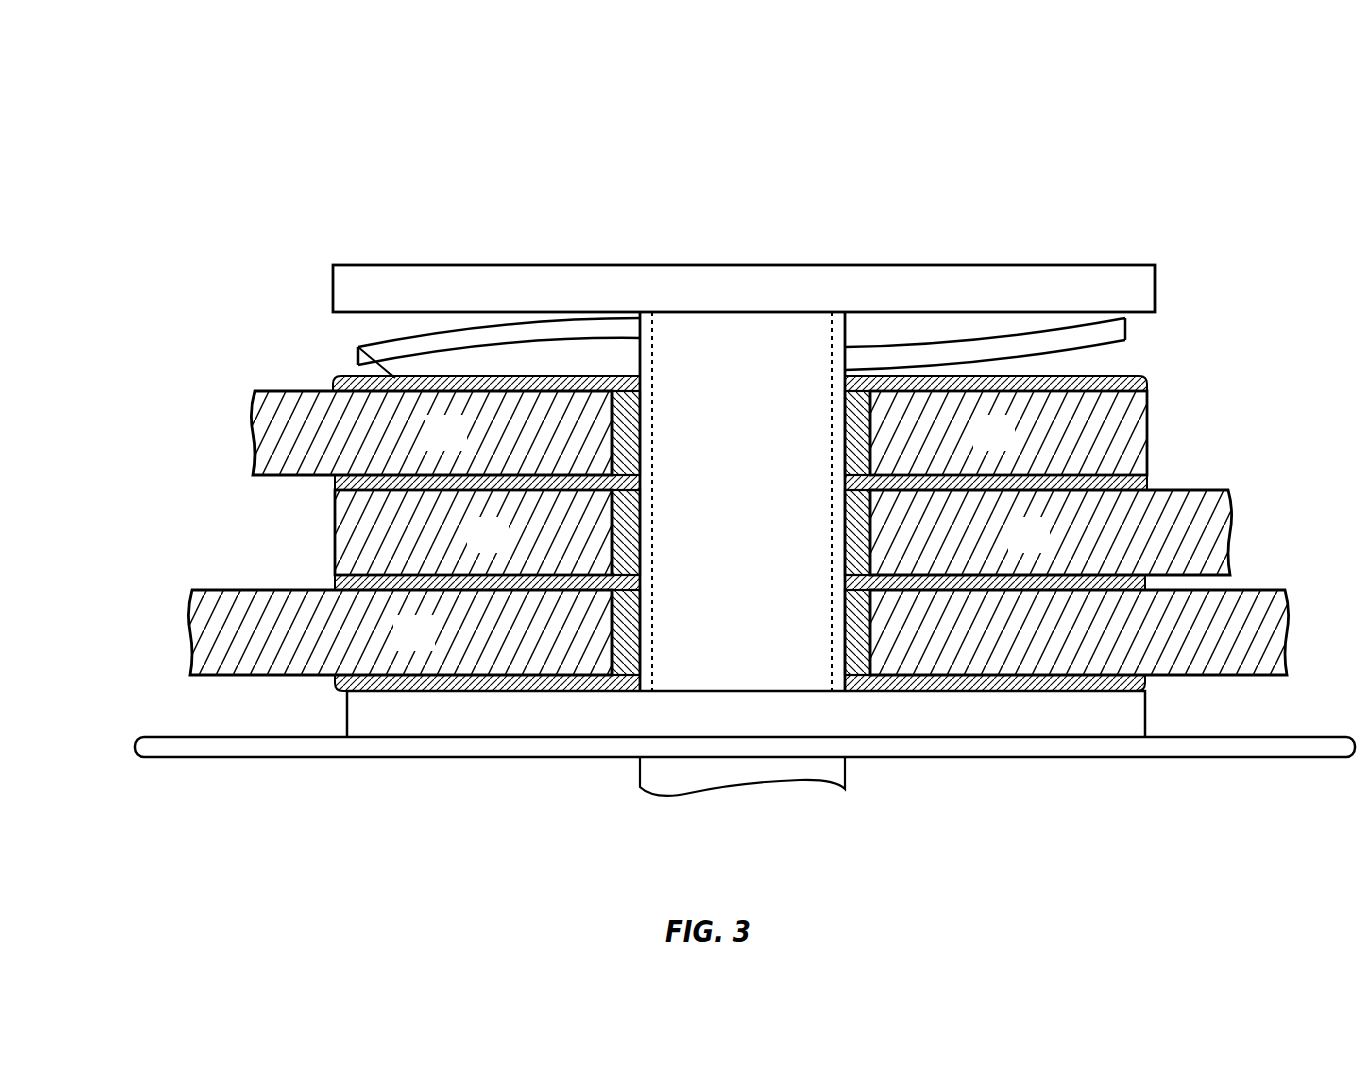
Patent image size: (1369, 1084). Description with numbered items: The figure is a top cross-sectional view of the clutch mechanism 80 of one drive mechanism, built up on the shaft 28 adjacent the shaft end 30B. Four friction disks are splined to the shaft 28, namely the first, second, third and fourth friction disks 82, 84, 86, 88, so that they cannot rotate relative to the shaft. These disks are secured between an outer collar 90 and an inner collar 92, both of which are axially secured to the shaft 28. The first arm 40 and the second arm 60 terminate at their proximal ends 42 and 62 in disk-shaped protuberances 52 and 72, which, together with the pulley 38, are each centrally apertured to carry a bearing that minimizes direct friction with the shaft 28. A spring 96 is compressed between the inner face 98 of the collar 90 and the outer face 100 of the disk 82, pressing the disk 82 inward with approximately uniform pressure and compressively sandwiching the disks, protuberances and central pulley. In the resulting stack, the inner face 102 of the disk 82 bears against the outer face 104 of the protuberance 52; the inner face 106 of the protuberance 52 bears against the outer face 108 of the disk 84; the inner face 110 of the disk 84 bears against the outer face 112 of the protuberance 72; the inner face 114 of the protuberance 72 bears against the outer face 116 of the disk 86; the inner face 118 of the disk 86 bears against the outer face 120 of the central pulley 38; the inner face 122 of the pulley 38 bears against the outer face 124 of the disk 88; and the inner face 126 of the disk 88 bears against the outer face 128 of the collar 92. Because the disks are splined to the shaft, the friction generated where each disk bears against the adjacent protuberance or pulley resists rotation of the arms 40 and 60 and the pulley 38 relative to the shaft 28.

The shaft 28 is at (680, 789).
The shaft end 30B is at (744, 498).
The pulley 38 is at (434, 650).
The first arm 40 is at (466, 450).
The proximal end of first arm 42 is at (1075, 465).
The protuberance 52 is at (1014, 450).
The second arm 60 is at (1049, 552).
The proximal end of second arm 62 is at (441, 472).
The protuberance 72 is at (508, 552).
The clutch mechanism 80 is at (744, 469).
The first friction disk 82 is at (333, 383).
The second friction disk 84 is at (340, 487).
The third friction disk 86 is at (335, 585).
The fourth friction disk 88 is at (337, 690).
The outer collar 90 is at (744, 288).
The inner collar 92 is at (766, 730).
The spring 96 is at (360, 358).
The inner face of collar 98 is at (878, 313).
The outer face of disk 100 is at (388, 378).
The inner face of disk 102 is at (1115, 389).
The outer face of protuberance 104 is at (1103, 382).
The inner face of protuberance 106 is at (403, 482).
The outer face of disk 108 is at (1103, 470).
The inner face of disk 110 is at (385, 479).
The outer face of protuberance 112 is at (1147, 481).
The inner face of protuberance 114 is at (1085, 578).
The outer face of disk 116 is at (1036, 571).
The inner face of disk 118 is at (930, 595).
The outer face of central pulley 120 is at (1147, 579).
The inner face of central pulley 122 is at (1033, 675).
The outer face of disk 124 is at (1140, 664).
The inner face of disk 126 is at (972, 690).
The outer face of collar 128 is at (1118, 684).